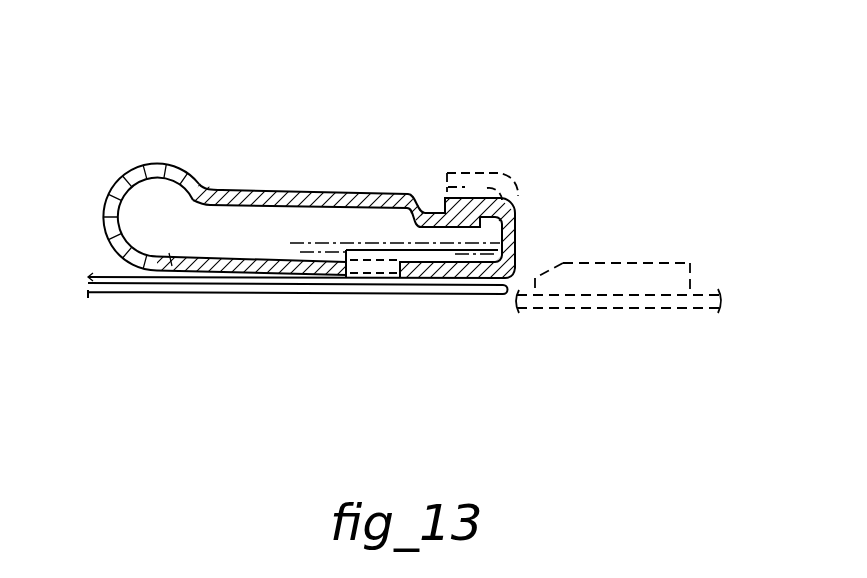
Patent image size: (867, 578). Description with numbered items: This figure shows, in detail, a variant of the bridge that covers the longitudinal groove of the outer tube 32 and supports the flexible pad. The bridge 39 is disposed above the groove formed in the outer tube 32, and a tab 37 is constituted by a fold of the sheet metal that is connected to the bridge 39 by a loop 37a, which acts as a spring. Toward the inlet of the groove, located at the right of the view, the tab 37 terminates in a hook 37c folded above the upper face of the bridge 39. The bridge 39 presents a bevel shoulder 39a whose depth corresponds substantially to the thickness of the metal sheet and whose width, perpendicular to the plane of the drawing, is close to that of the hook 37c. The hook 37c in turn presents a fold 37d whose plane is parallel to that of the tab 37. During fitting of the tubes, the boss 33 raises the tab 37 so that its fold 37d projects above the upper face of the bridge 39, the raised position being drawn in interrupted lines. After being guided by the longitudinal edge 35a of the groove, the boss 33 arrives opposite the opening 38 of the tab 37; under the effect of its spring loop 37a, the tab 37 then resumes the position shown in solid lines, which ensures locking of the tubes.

The outer tube 32 is at (160, 296).
The boss 33 is at (638, 278).
The longitudinal edge of the groove 35a is at (297, 281).
The tab 37 is at (186, 254).
The loop 37a is at (106, 201).
The hook 37c is at (518, 226).
The fold 37d is at (470, 205).
The opening 38 is at (333, 292).
The bridge 39 is at (291, 188).
The bevel shoulder 39a is at (455, 242).